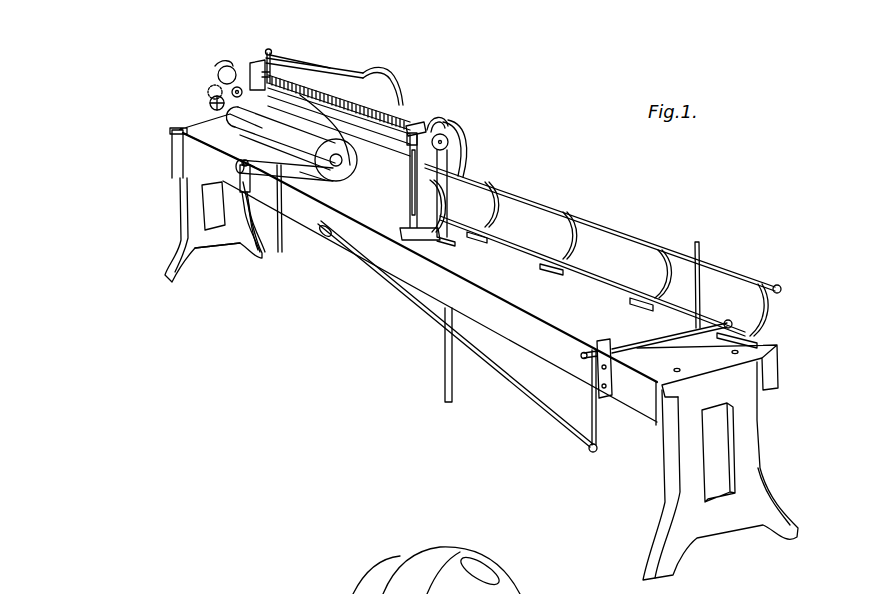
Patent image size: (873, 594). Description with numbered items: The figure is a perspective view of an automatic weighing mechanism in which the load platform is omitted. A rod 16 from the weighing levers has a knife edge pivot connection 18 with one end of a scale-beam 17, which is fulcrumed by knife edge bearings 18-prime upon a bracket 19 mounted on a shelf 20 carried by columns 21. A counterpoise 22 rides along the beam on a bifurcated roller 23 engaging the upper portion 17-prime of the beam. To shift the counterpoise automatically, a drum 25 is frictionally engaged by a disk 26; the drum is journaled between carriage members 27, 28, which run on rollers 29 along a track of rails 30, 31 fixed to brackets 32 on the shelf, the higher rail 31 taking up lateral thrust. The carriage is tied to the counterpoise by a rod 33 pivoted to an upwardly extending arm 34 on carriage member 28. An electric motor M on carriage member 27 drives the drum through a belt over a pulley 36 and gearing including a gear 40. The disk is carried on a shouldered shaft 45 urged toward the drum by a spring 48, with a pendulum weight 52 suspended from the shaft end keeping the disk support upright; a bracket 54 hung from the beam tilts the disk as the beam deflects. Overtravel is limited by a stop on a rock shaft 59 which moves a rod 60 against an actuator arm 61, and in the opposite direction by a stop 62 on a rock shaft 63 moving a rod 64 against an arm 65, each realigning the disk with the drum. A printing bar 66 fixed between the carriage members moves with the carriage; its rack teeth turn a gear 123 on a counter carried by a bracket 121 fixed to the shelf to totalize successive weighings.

The rod 16 is at (443, 360).
The scale-beam 17 is at (348, 110).
The upper portion of the beam 17-prime is at (300, 66).
The knife edge pivot connection 18 is at (448, 142).
The knife edge bearings 18-prime is at (432, 116).
The bracket 19 is at (462, 174).
The shelf 20 is at (413, 269).
The columns 21 is at (212, 248).
The counterpoise 22 is at (260, 62).
The bifurcated roller 23 is at (278, 138).
The drum 25 is at (265, 132).
The disk 26 is at (325, 130).
The carriage member 27 is at (212, 100).
The carriage member 28 is at (408, 215).
The rollers 29 is at (440, 214).
The rail 30 is at (615, 288).
The rail 31 is at (628, 237).
The brackets 32 is at (562, 240).
The rod 33 is at (330, 72).
The arm 34 is at (402, 92).
The pulley 36 is at (415, 570).
The gear 40 is at (222, 70).
The shouldered shaft 45 is at (240, 165).
The spring 48 is at (246, 178).
The pendulum weight 52 is at (249, 200).
The bracket 54 is at (305, 88).
The rock shaft 59 is at (200, 128).
The rod 60 is at (215, 185).
The actuator arm 61 is at (280, 252).
The stop 62 is at (701, 247).
The rock shaft 63 is at (640, 345).
The rod 64 is at (542, 416).
The arm 65 is at (327, 240).
The bar 66 is at (410, 132).
The bracket 121 is at (440, 122).
The gear 123 is at (327, 184).
The electric motor M is at (221, 56).